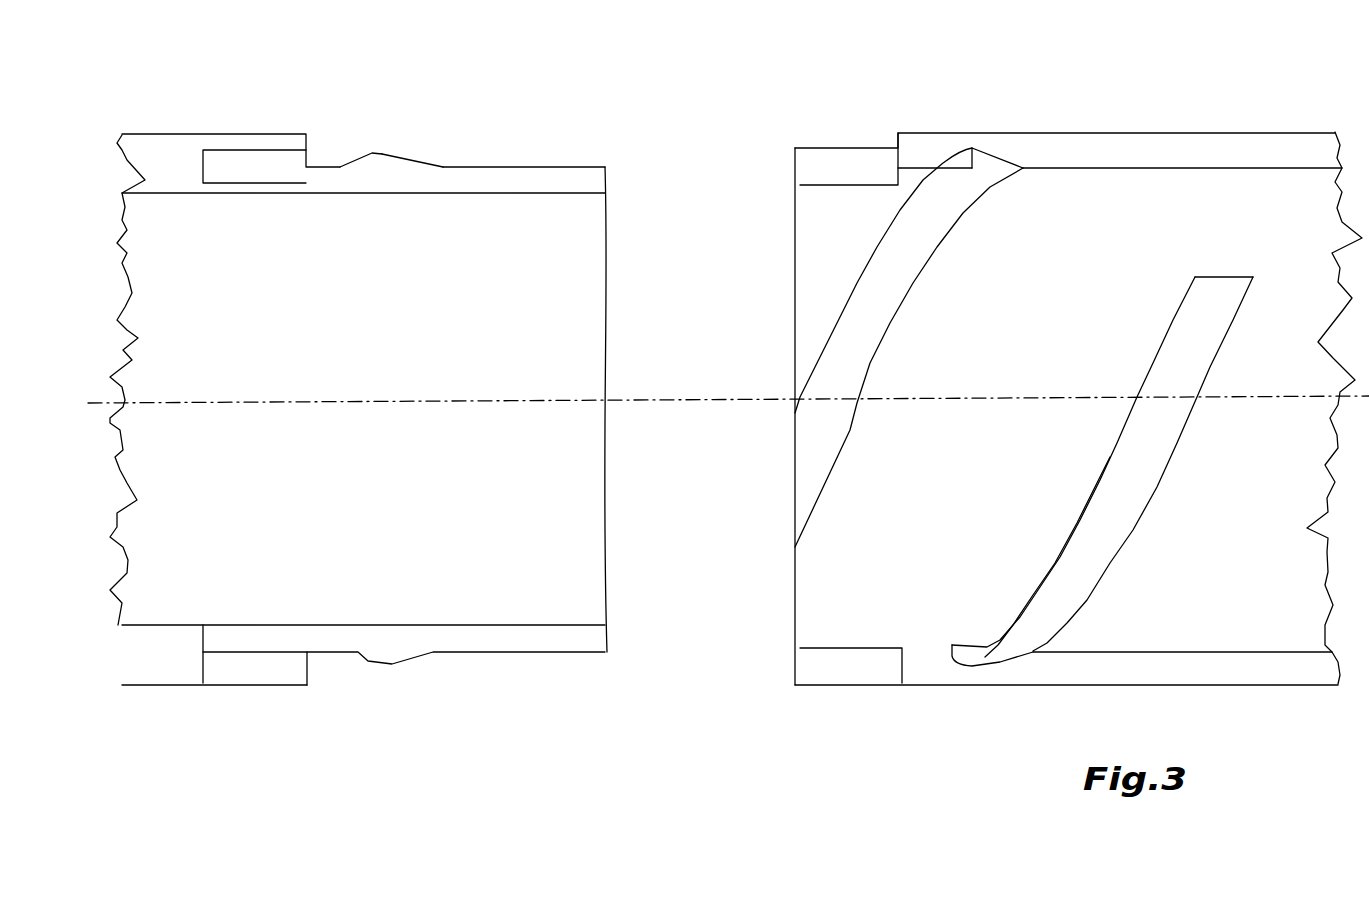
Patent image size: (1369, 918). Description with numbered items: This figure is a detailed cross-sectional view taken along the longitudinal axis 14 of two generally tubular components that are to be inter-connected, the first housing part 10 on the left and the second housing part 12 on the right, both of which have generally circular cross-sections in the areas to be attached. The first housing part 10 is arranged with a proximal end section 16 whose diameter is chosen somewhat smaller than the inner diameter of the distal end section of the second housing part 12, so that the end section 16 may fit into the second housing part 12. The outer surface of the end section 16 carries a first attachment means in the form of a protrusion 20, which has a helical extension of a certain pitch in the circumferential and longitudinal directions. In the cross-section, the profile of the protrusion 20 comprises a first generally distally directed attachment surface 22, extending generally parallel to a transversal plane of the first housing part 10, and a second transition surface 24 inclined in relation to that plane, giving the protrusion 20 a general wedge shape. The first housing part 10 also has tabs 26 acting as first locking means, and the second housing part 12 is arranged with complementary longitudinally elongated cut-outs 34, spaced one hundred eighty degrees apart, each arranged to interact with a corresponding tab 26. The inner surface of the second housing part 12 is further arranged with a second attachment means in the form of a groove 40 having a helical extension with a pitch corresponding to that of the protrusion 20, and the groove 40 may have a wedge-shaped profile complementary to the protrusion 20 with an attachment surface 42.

The first housing part 10 is at (357, 417).
The second housing part 12 is at (994, 413).
The longitudinal axis 14 is at (643, 400).
The proximal end section 16 is at (548, 645).
The protrusion 20 is at (393, 170).
The attachment surface 22 is at (367, 157).
The transition surface 24 is at (415, 160).
The tab 26 is at (258, 140).
The cut-out 34 is at (852, 162).
The groove 40 is at (903, 273).
The attachment surface 42 is at (975, 655).